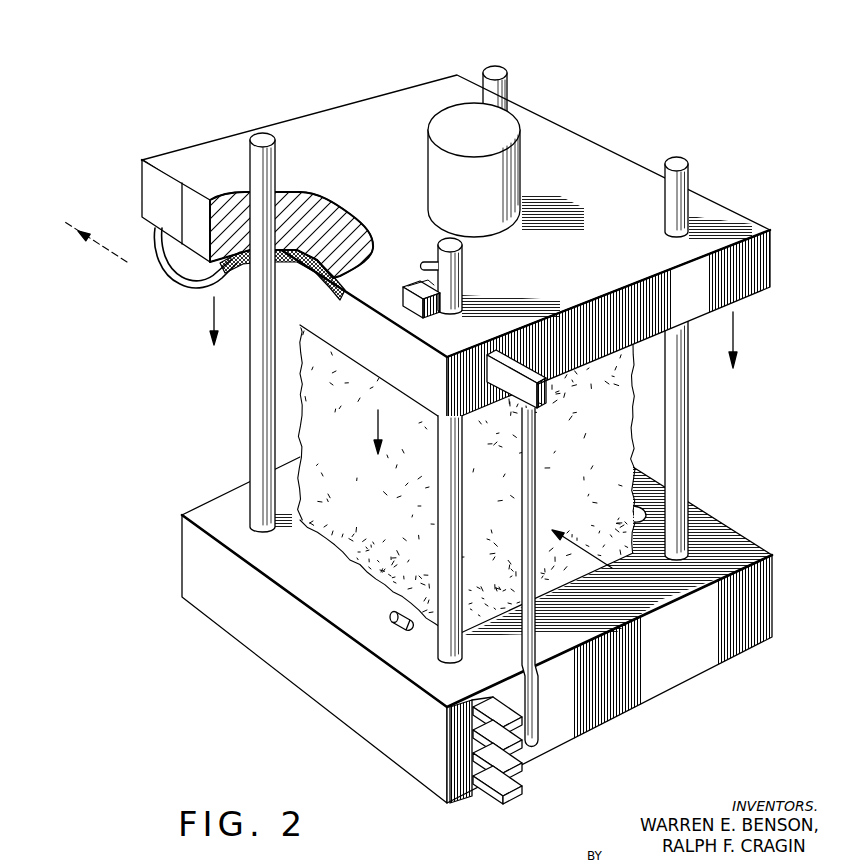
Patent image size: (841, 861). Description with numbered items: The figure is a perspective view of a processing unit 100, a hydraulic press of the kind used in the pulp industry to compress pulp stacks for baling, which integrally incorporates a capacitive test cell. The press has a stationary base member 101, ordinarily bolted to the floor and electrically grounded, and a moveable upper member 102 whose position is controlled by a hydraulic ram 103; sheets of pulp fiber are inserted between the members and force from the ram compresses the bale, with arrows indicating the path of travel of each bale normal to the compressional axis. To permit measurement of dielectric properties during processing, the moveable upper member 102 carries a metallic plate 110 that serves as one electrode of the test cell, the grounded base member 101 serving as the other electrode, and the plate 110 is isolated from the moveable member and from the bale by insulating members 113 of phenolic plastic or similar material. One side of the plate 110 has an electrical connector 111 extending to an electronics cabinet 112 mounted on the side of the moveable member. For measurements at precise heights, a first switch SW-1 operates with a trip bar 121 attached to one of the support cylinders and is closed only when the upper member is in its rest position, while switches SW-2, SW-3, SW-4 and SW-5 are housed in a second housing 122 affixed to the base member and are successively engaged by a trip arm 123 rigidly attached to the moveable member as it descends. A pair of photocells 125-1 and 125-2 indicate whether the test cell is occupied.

The processing unit 100 is at (219, 404).
The stationary base member 101 is at (683, 690).
The moveable upper member 102 is at (750, 272).
The hydraulic ram 103 is at (500, 183).
The metallic plate 110 is at (333, 248).
The electrical connector 111 is at (168, 275).
The electronics cabinet 112 is at (340, 118).
The insulating members 113 is at (303, 247).
The trip bar 121 is at (421, 263).
The second housing 122 is at (523, 797).
The trip arm 123 is at (534, 714).
The photocell 125-1 is at (395, 621).
The photocell 125-2 is at (645, 512).
The first switch SW-1 is at (408, 300).
The second switch SW-2 is at (480, 721).
The third switch SW-3 is at (487, 750).
The fourth switch SW-4 is at (487, 770).
The fifth switch SW-5 is at (496, 792).